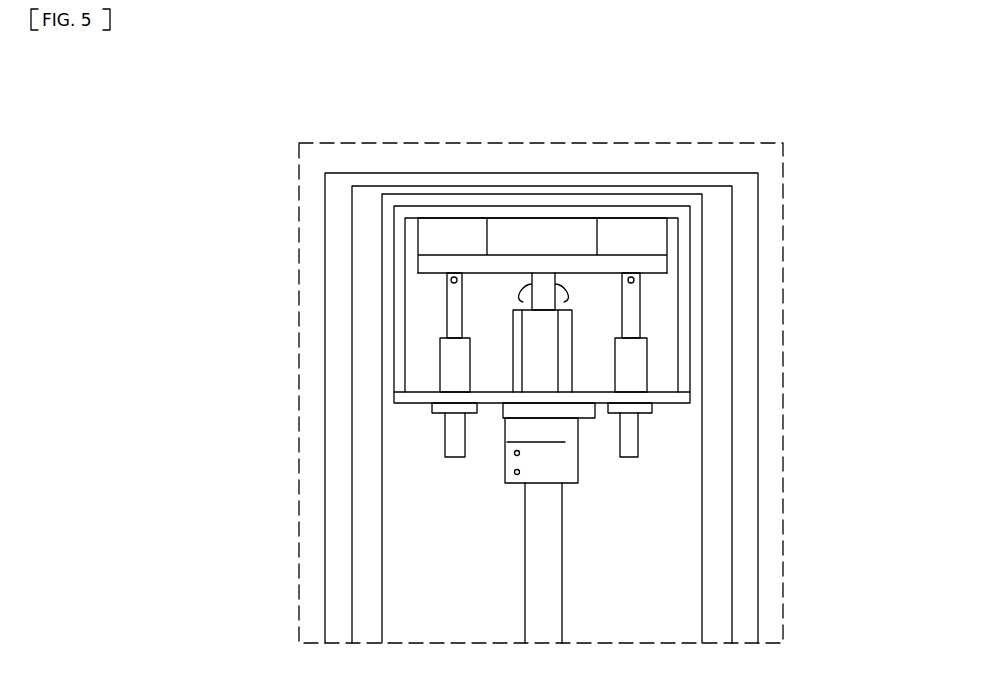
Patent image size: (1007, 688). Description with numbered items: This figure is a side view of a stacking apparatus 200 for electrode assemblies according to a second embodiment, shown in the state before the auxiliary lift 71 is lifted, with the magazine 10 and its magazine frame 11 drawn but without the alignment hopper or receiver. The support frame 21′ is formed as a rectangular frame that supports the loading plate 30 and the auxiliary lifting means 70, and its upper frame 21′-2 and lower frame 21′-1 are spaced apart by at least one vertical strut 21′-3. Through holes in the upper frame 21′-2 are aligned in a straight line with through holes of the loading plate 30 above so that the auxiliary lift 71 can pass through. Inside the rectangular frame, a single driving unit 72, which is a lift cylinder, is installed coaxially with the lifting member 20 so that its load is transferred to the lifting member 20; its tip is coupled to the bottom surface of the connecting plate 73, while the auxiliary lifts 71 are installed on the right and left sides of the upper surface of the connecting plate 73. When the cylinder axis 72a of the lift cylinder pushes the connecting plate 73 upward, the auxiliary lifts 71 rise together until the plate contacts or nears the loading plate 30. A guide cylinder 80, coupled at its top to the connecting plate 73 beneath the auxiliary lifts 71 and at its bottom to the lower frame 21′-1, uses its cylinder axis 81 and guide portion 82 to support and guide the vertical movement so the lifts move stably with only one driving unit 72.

The magazine 10 is at (805, 454).
The magazine frame 11 is at (748, 223).
The stacking apparatus 200 is at (948, 190).
The lifting member 20 is at (550, 575).
The support frame 21′ is at (372, 295).
The lower frame 21′-1 is at (422, 404).
The upper frame 21′-2 is at (396, 220).
The vertical strut 21′-3 is at (400, 258).
The loading plate 30 is at (384, 198).
The auxiliary lifting means 70 is at (297, 358).
The auxiliary lift 71 is at (452, 232).
The driving unit (lift cylinder) 72 is at (516, 373).
The cylinder axis 72a is at (563, 300).
The connecting plate 73 is at (438, 265).
The guide cylinder 80 is at (640, 351).
The cylinder axis 81 is at (637, 303).
The guide portion 82 is at (645, 371).